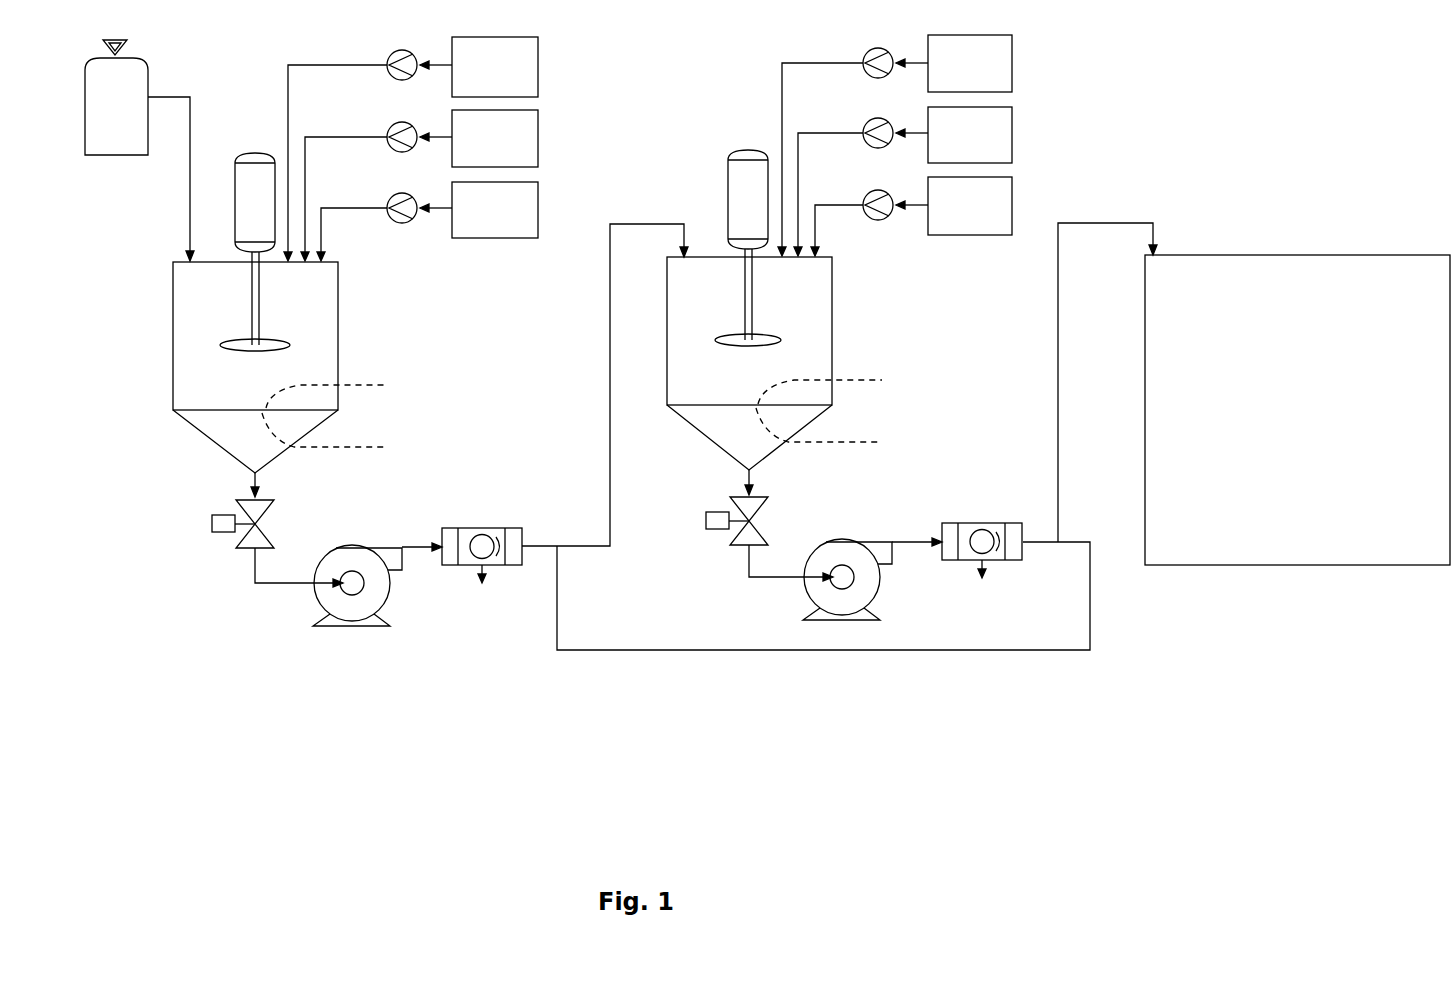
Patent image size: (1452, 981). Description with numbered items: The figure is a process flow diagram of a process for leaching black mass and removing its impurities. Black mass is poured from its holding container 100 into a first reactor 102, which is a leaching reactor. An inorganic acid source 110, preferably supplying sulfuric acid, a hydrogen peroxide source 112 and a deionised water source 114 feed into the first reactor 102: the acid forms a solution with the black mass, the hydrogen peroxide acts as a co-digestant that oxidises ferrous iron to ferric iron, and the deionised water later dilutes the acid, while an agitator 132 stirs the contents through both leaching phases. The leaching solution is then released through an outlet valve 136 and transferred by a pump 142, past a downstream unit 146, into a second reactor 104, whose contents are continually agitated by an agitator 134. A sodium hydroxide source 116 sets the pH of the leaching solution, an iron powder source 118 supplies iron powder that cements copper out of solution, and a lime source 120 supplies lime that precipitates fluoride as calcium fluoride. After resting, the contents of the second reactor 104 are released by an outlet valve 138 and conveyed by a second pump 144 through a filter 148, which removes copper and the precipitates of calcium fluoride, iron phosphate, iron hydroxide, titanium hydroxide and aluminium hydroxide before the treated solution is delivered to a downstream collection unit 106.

The holding container 100 is at (149, 64).
The first reactor 102 is at (173, 372).
The second reactor 104 is at (832, 358).
The product collection unit 106 is at (1254, 394).
The inorganic acid source 110 is at (411, 149).
The hydrogen peroxide source 112 is at (419, 185).
The deionised water source 114 is at (427, 221).
The sodium hydroxide source 116 is at (895, 145).
The iron powder source 118 is at (903, 181).
The lime source 120 is at (911, 216).
The agitator 132 is at (253, 331).
The agitator 134 is at (753, 327).
The outlet valve 136 is at (260, 521).
The outlet valve 138 is at (755, 518).
The pump 142 is at (366, 547).
The second pump 144 is at (861, 542).
The first flow meter 146 is at (491, 527).
The filter 148 is at (971, 522).